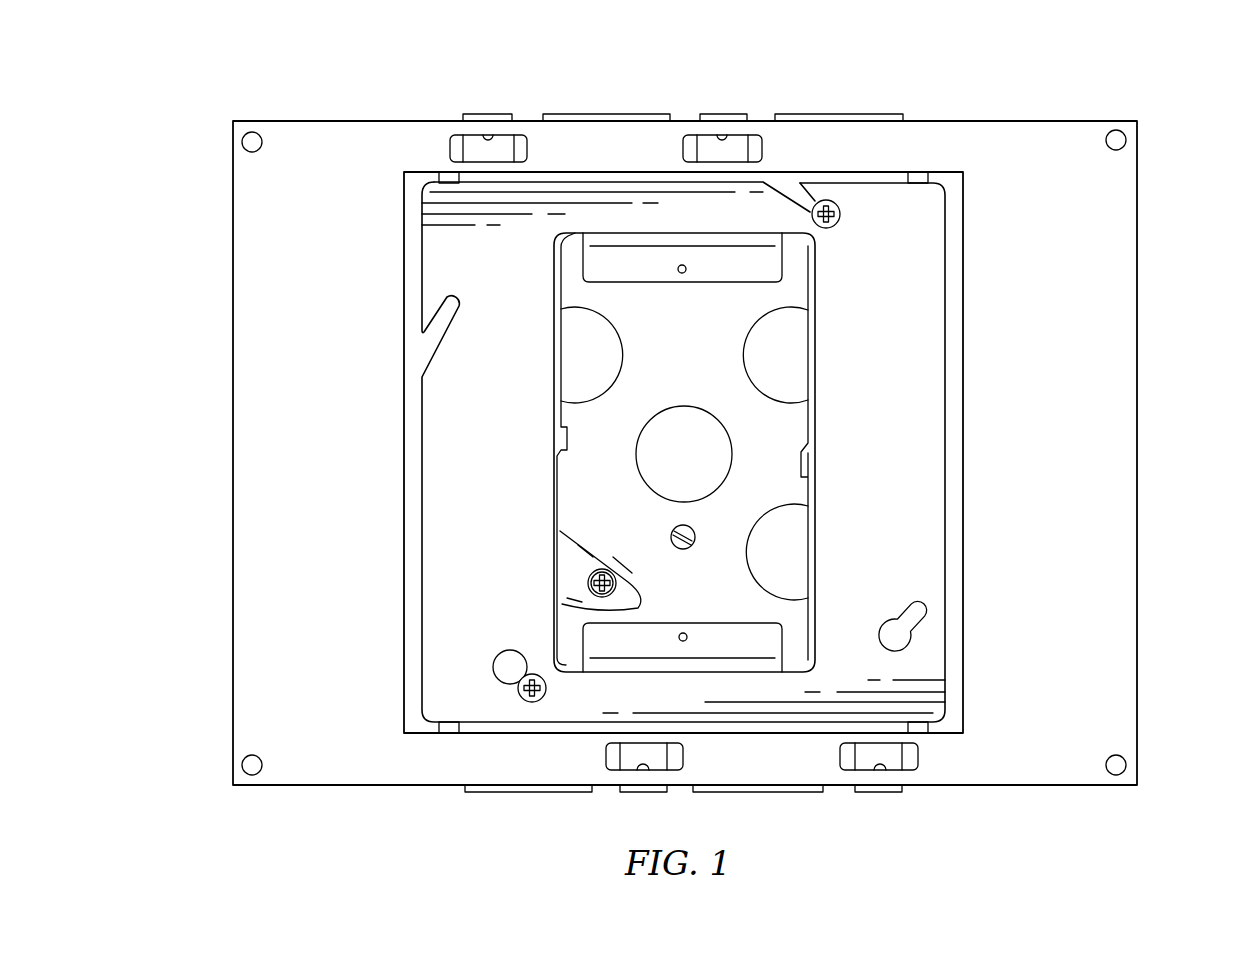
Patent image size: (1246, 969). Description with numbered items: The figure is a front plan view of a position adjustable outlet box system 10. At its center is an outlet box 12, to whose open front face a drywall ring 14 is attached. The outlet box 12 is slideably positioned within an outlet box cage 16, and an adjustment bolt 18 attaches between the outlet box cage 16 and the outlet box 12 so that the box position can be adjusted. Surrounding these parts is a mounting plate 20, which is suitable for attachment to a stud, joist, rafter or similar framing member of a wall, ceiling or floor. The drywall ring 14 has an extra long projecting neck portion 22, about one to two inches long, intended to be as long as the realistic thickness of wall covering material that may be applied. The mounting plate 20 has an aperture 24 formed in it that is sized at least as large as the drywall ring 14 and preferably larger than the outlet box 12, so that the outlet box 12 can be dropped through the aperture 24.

The position adjustable outlet box system 10 is at (684, 420).
The outlet box 12 is at (720, 452).
The drywall ring 14 is at (486, 442).
The outlet box cage 16 is at (884, 109).
The adjustment bolt 18 is at (688, 548).
The mounting plate 20 is at (253, 372).
The projecting neck portion 22 is at (818, 546).
The aperture 24 is at (953, 282).